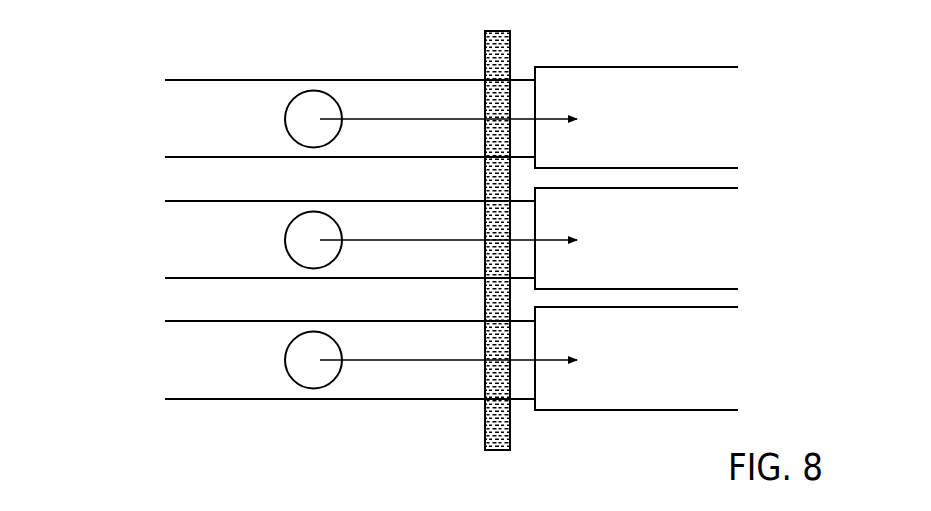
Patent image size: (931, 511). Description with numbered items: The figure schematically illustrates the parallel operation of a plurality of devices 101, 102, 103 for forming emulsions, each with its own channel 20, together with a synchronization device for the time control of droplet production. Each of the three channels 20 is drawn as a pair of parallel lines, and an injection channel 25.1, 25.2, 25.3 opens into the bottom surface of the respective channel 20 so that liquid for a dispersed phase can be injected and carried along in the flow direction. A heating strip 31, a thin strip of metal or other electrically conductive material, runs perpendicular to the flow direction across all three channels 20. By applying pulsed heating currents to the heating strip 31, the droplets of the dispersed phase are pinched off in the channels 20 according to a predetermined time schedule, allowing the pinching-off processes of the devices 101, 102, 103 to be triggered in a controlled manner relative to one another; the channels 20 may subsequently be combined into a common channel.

The channel 20 is at (243, 100).
The heating strip 31 is at (485, 63).
The injection channel 25.1 is at (302, 134).
The injection channel 25.2 is at (312, 259).
The injection channel 25.3 is at (312, 376).
The device for forming emulsions 101 is at (176, 124).
The device for forming emulsions 102 is at (176, 238).
The device for forming emulsions 103 is at (176, 359).